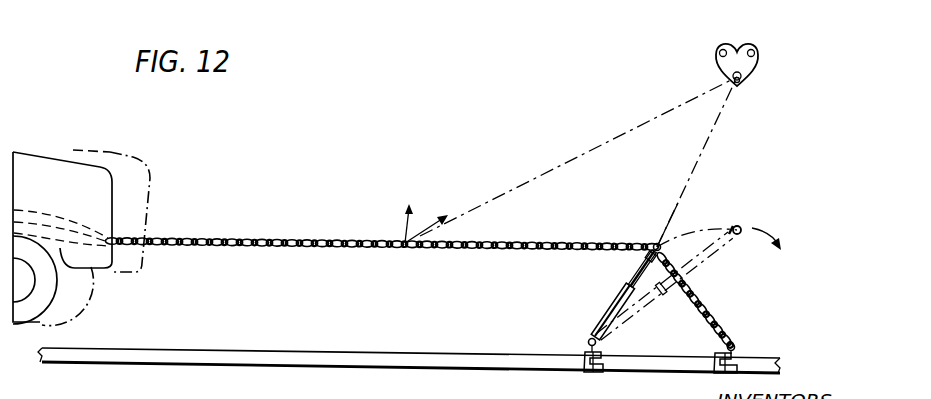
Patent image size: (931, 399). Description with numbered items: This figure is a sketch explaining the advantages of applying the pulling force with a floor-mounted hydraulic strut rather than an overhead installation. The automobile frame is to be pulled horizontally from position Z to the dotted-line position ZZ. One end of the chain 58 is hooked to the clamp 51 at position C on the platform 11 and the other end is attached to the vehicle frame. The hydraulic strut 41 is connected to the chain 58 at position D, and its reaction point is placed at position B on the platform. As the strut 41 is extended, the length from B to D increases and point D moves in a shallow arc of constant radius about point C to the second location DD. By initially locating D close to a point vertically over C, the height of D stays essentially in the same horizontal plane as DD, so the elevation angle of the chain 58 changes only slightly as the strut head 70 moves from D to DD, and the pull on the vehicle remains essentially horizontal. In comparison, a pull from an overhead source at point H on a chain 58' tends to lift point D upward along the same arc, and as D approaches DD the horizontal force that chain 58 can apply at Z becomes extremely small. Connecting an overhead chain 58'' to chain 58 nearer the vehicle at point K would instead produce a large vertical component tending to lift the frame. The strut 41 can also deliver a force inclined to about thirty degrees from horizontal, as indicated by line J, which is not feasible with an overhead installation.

The platform 11 is at (173, 348).
The hydraulic strut 41 is at (607, 308).
The clamp 51 is at (583, 364).
The chain 58 is at (381, 263).
The chain 58' is at (689, 162).
The chain 58'' is at (578, 156).
The strut head 70 is at (643, 253).
The reaction point B is at (584, 352).
The clamp position C is at (737, 349).
The strut connection point D is at (656, 243).
The second location of point D DD is at (745, 228).
The overhead pulling point H is at (748, 81).
The inclined force line J is at (766, 252).
The chain connection point K is at (405, 246).
The vehicle frame position Z is at (112, 242).
The pulled vehicle frame position ZZ is at (153, 243).